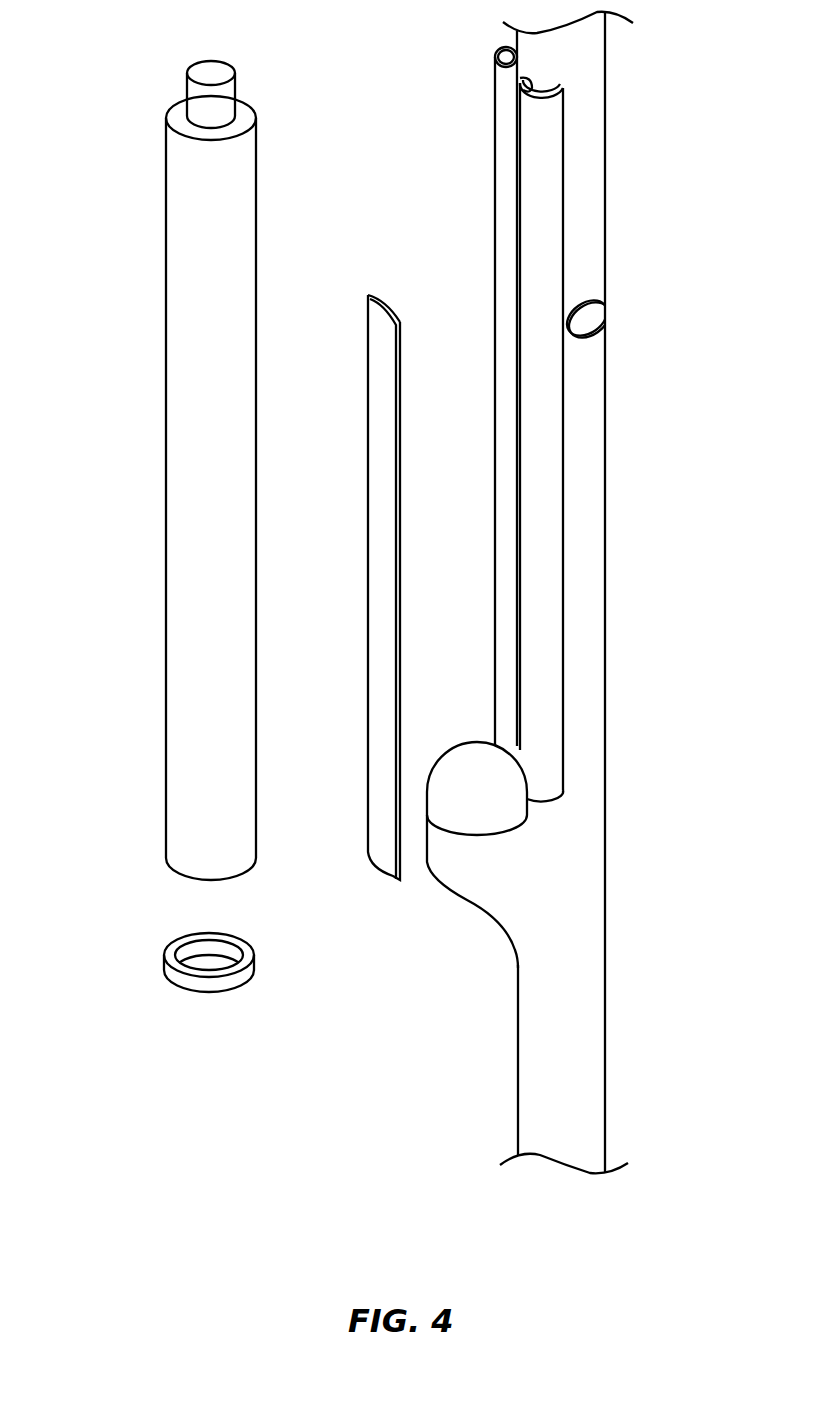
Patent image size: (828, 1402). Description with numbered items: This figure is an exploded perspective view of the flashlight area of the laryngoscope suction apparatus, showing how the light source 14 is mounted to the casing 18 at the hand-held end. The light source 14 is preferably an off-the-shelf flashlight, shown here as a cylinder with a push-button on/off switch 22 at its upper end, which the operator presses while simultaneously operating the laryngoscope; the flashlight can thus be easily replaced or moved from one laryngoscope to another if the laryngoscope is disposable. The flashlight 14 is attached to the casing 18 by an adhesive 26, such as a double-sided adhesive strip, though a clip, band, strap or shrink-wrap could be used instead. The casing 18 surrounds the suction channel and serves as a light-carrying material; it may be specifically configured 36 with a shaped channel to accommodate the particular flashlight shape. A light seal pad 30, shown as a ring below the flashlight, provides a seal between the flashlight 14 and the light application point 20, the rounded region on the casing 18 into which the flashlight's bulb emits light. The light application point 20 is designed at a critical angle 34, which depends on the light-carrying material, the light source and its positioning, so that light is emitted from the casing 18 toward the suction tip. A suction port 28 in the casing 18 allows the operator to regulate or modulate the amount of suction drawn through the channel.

The light source 14 is at (166, 438).
The push-button on/off switch 22 is at (186, 92).
The light seal pad 30 is at (198, 933).
The adhesive 26 is at (386, 304).
The casing 18 is at (605, 583).
The casing configuration 36 is at (494, 111).
The light application point 20 is at (484, 762).
The critical angle 34 is at (472, 893).
The suction port 28 is at (592, 316).